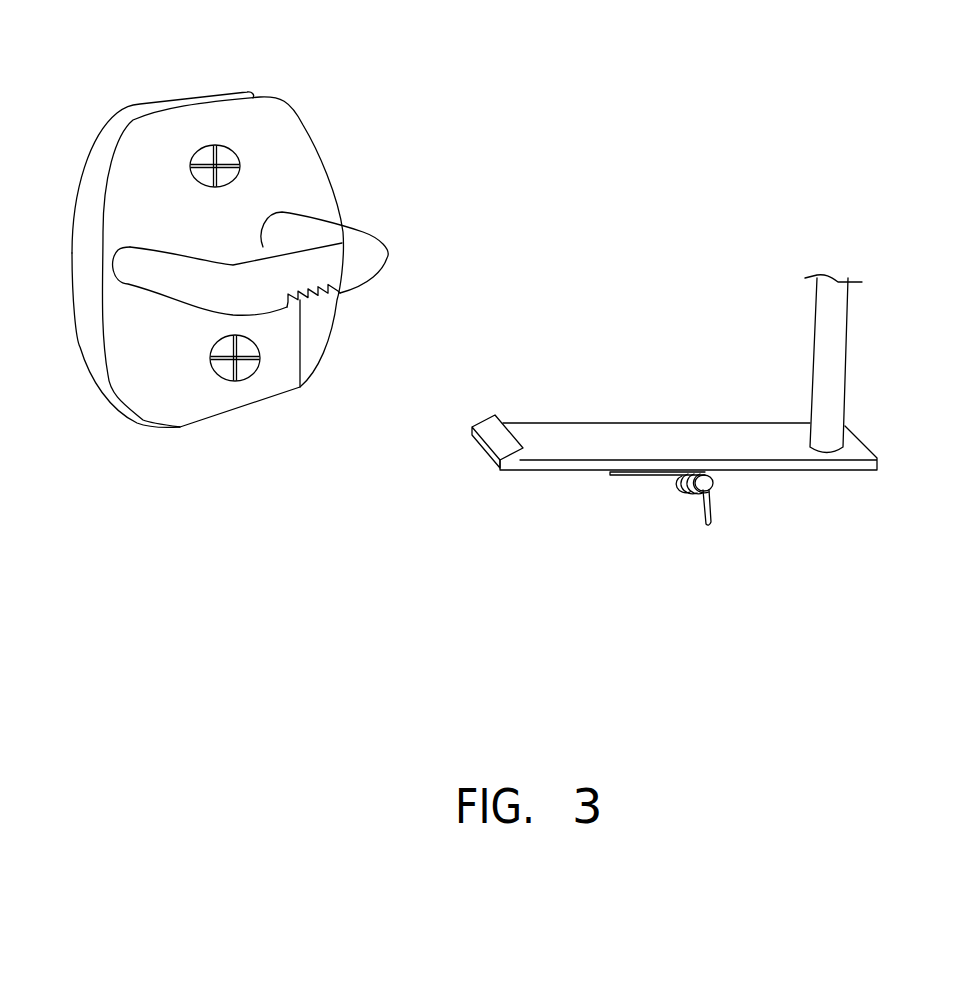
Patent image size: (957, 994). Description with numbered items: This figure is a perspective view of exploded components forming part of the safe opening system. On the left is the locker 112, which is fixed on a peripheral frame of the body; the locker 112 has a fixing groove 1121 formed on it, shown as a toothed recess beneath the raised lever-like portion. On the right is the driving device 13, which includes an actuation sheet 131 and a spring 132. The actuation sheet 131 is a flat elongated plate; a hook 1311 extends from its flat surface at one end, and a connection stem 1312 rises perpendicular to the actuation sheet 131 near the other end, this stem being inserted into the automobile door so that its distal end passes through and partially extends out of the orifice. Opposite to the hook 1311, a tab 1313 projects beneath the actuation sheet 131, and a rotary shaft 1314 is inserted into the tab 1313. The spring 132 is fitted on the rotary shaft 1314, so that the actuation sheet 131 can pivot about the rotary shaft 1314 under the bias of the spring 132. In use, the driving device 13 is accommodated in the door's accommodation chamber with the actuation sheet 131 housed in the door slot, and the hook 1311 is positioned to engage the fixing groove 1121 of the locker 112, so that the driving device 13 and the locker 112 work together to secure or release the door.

The locker 112 is at (153, 277).
The fixing groove 1121 is at (300, 387).
The driving device 13 is at (672, 506).
The actuation sheet 131 is at (585, 442).
The hook 1311 is at (503, 435).
The connection stem 1312 is at (827, 423).
The tab 1313 is at (680, 477).
The rotary shaft 1314 is at (700, 492).
The spring 132 is at (709, 492).